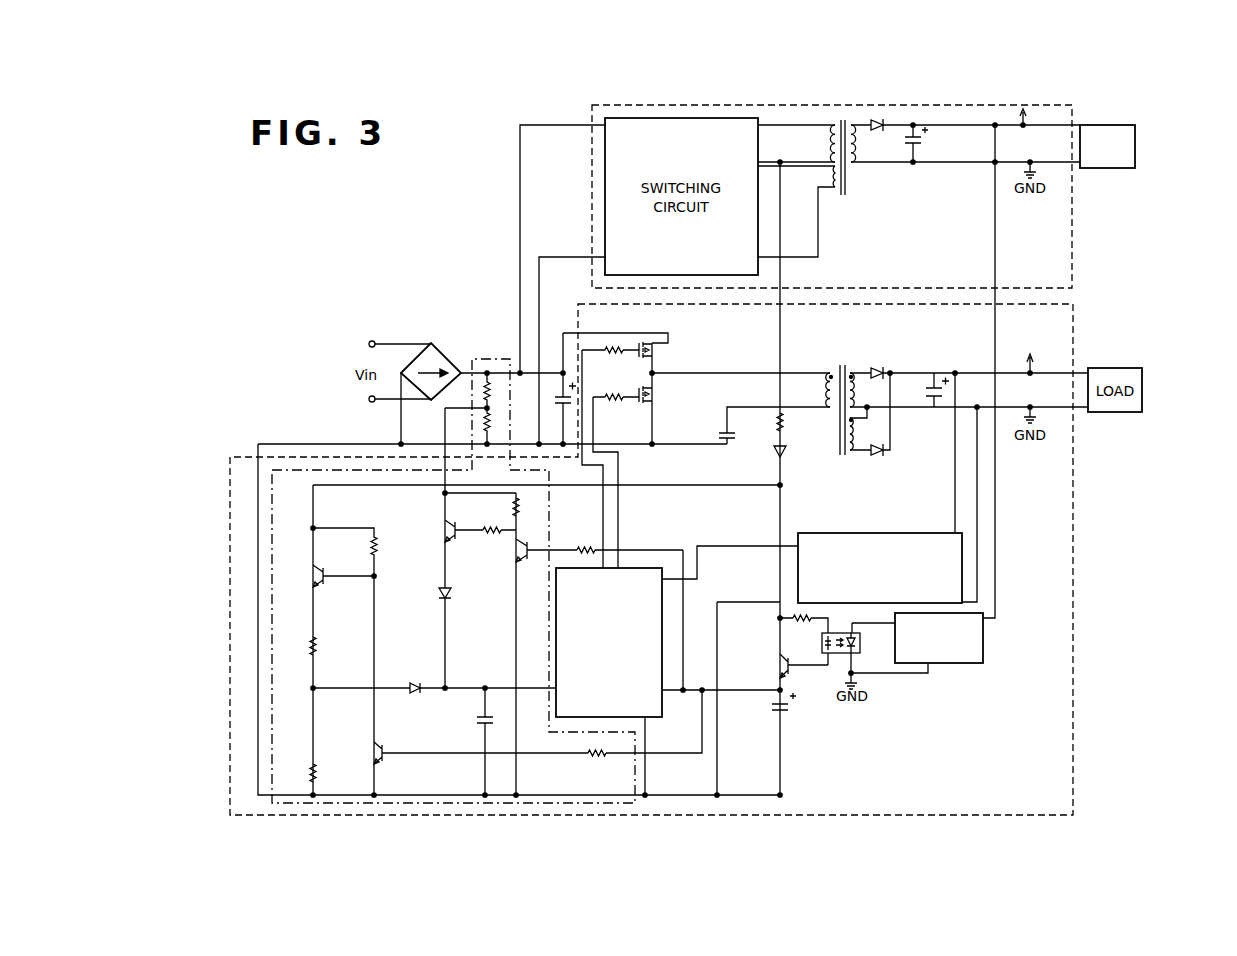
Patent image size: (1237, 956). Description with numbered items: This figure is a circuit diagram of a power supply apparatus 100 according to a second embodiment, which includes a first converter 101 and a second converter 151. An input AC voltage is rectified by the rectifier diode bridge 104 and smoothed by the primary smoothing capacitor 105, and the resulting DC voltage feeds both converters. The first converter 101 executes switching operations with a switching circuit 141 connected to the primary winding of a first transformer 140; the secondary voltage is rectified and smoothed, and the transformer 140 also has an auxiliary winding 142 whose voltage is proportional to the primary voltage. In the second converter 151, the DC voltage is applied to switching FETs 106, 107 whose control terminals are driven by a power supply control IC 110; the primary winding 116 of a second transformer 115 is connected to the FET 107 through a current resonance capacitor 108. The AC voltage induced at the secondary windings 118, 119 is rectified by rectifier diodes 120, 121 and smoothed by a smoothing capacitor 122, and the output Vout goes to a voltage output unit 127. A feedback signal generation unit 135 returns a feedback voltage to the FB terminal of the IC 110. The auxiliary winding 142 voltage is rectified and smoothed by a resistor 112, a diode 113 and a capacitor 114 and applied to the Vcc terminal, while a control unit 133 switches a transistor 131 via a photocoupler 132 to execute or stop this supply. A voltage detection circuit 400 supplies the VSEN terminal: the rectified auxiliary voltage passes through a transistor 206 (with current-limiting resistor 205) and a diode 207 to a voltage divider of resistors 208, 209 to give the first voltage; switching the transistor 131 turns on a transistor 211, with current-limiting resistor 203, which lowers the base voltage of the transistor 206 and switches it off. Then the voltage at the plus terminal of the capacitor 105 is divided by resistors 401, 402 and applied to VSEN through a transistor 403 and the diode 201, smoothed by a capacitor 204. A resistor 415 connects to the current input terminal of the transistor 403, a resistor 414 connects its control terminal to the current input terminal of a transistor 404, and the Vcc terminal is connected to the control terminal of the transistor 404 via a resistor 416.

The power supply apparatus 100 is at (1150, 153).
The first converter 101 is at (1075, 200).
The rectifier diode bridge 104 is at (438, 350).
The primary smoothing capacitor 105 is at (560, 392).
The switching FET 106 is at (641, 340).
The switching FET 107 is at (641, 403).
The current resonance capacitor 108 is at (725, 431).
The power supply control IC 110 is at (641, 566).
The resistor 112 is at (785, 424).
The diode 113 is at (773, 454).
The capacitor 114 is at (772, 707).
The second transformer 115 is at (831, 368).
The primary winding 116 is at (826, 390).
The secondary winding 118 is at (852, 370).
The secondary winding 119 is at (856, 432).
The rectifier diode 120 is at (880, 368).
The rectifier diode 121 is at (878, 456).
The smoothing capacitor 122 is at (934, 384).
The voltage output unit 127 is at (1032, 358).
The transistor 131 is at (783, 665).
The photocoupler 132 is at (840, 655).
The control unit 133 is at (968, 664).
The feedback signal generation unit 135 is at (840, 532).
The first transformer 140 is at (828, 160).
The switching circuit 141 is at (770, 142).
The auxiliary winding 142 is at (833, 192).
The second converter 151 is at (1073, 330).
The diode 201 is at (438, 594).
The current-limiting resistor 203 is at (594, 757).
The capacitor 204 is at (476, 720).
The current-limiting resistor 205 is at (378, 538).
The transistor 206 is at (320, 576).
The diode 207 is at (412, 684).
The resistor 208 is at (309, 648).
The resistor 209 is at (309, 766).
The transistor 211 is at (380, 753).
The voltage detection circuit 400 is at (637, 799).
The resistor 401 is at (487, 382).
The resistor 402 is at (481, 421).
The transistor 403 is at (452, 530).
The transistor 404 is at (524, 553).
The resistor 414 is at (489, 534).
The resistor 415 is at (510, 508).
The resistor 416 is at (584, 546).